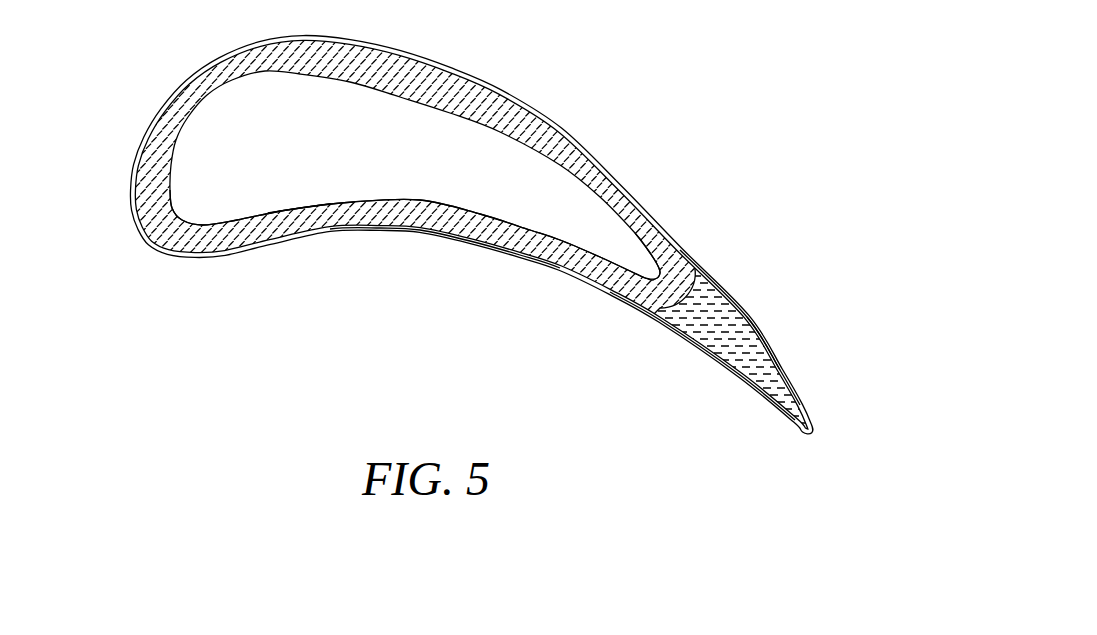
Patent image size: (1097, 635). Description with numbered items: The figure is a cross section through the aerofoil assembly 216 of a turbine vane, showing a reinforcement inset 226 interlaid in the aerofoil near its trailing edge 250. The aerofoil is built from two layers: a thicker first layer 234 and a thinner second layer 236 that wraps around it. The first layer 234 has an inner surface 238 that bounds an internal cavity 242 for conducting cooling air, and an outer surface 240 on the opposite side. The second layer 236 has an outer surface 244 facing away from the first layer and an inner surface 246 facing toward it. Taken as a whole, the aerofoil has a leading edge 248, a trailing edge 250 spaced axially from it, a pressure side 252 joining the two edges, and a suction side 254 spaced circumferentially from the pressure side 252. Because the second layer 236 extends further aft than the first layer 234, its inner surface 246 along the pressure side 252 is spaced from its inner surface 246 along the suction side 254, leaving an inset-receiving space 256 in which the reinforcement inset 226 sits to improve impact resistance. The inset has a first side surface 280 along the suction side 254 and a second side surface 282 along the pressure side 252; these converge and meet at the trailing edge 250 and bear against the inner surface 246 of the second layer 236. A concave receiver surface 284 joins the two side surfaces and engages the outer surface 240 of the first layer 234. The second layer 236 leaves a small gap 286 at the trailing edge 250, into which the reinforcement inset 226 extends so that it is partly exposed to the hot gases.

The aerofoil assembly 216 is at (610, 97).
The reinforcement inset 226 is at (790, 362).
The first layer 234 is at (490, 86).
The second layer 236 is at (430, 56).
The inner surface 238 is at (397, 200).
The outer surface 240 is at (490, 243).
The internal cavity 242 is at (318, 133).
The outer surface 244 is at (387, 236).
The inner surface 246 is at (350, 218).
The leading edge 248 is at (122, 210).
The trailing edge 250 is at (840, 437).
The pressure side 252 is at (595, 322).
The suction side 254 is at (613, 150).
The inset-receiving space 256 is at (740, 300).
The first side surface 280 is at (760, 327).
The second side surface 282 is at (706, 356).
The receiver surface 284 is at (647, 232).
The gap 286 is at (815, 440).